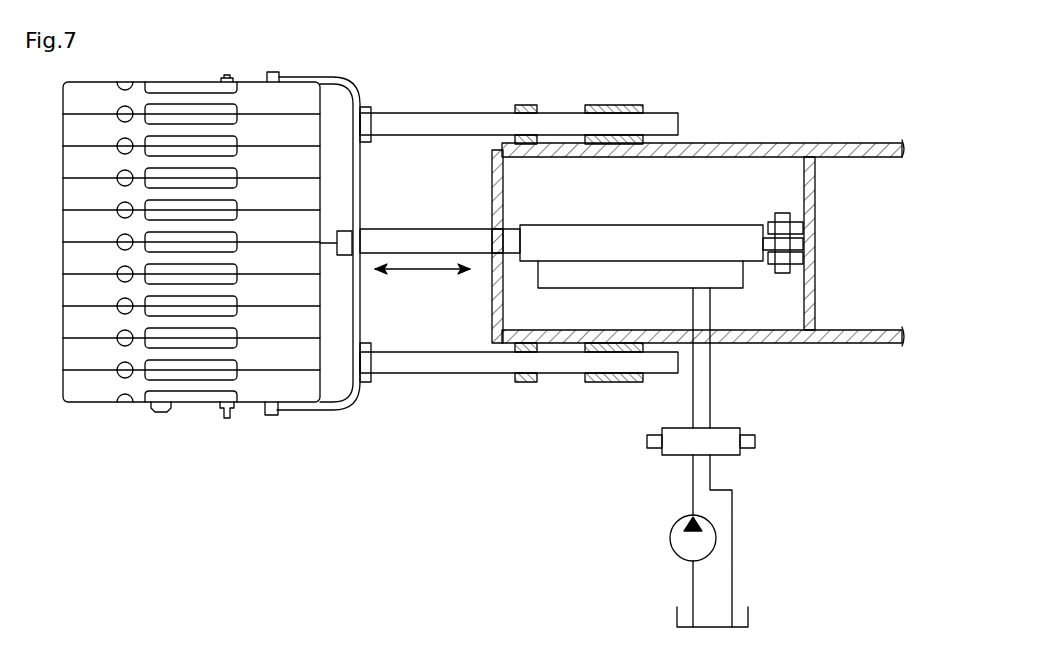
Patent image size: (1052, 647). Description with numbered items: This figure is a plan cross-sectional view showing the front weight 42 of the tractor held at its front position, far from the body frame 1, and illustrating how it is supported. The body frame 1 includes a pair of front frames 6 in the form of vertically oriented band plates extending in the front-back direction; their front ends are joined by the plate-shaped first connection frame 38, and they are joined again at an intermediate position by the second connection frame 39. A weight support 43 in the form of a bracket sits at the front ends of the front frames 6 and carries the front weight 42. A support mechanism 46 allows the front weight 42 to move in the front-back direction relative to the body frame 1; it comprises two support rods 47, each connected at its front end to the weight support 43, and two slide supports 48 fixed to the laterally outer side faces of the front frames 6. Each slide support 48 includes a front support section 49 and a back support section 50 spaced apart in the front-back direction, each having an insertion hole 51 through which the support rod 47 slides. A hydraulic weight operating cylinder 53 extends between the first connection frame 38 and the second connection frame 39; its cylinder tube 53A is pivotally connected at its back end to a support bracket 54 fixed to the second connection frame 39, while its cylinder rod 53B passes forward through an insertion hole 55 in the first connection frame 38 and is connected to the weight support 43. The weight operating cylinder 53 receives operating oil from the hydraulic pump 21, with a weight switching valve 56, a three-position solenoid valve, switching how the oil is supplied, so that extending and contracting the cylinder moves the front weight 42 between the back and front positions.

The body frame 1 is at (645, 240).
The front frames 6 is at (773, 143).
The hydraulic pump 21 is at (671, 543).
The first connection frame 38 is at (492, 316).
The second connection frame 39 is at (814, 180).
The front weight 42 is at (249, 421).
The weight support 43 is at (354, 395).
The support mechanism 46 is at (580, 405).
The support rods 47 is at (424, 113).
The slide supports 48 is at (603, 267).
The front support section 49 is at (521, 105).
The back support section 50 is at (620, 105).
The insertion hole 51 is at (587, 120).
The weight operating cylinder 53 is at (561, 229).
The cylinder tube 53A is at (648, 232).
The cylinder rod 53B is at (400, 237).
The support bracket 54 is at (800, 258).
The insertion hole 55 is at (498, 246).
The weight switching valve 56 is at (730, 458).